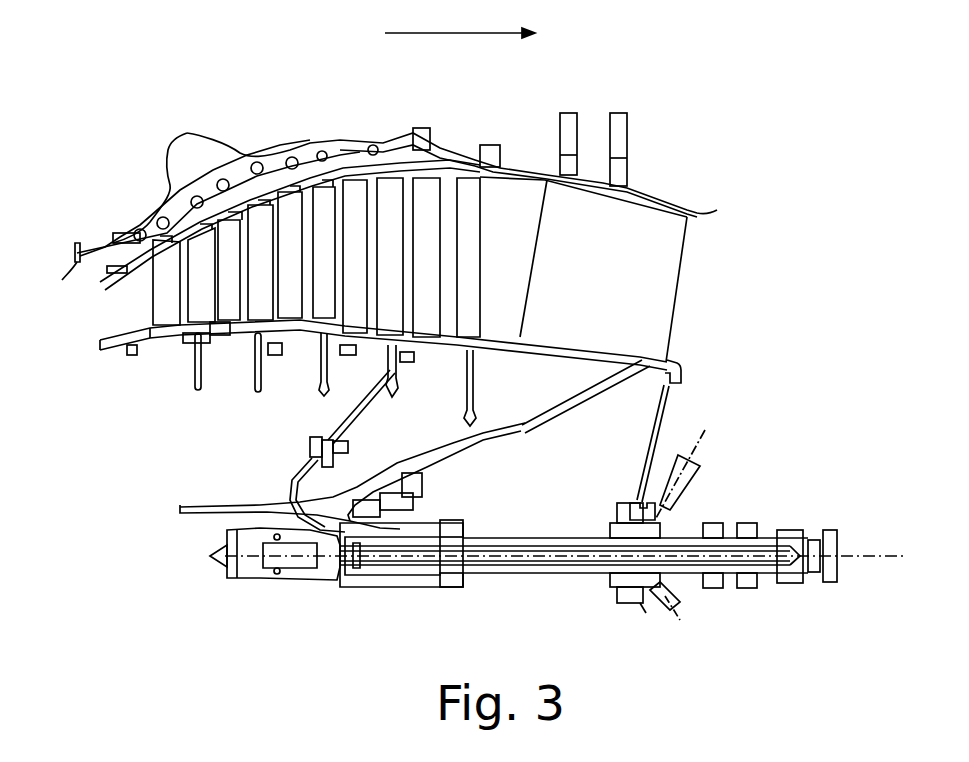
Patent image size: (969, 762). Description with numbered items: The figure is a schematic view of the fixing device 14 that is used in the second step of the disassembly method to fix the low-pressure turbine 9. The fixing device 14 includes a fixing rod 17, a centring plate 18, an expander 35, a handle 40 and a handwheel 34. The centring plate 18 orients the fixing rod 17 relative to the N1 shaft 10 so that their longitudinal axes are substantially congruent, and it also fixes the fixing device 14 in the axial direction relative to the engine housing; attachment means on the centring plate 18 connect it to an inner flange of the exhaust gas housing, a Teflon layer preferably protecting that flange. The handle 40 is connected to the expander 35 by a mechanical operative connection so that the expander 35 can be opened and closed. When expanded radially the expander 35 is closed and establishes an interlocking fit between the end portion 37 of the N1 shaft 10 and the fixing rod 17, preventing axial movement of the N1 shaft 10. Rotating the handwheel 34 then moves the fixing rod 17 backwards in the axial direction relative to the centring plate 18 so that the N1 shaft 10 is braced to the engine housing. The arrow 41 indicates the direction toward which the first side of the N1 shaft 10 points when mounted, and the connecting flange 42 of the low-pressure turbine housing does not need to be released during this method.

The low-pressure turbine 9 is at (407, 207).
The N1 shaft 10 is at (225, 556).
The fixing device 14 is at (476, 600).
The fixing rod 17 is at (588, 566).
The centring plate 18 is at (672, 408).
The handwheel 34 is at (692, 462).
The expander 35 is at (312, 579).
The end portion of the N1 shaft 37 is at (303, 480).
The handle 40 is at (830, 527).
The arrow 41 is at (460, 21).
The connecting flange of the low-pressure turbine housing 42 is at (62, 284).